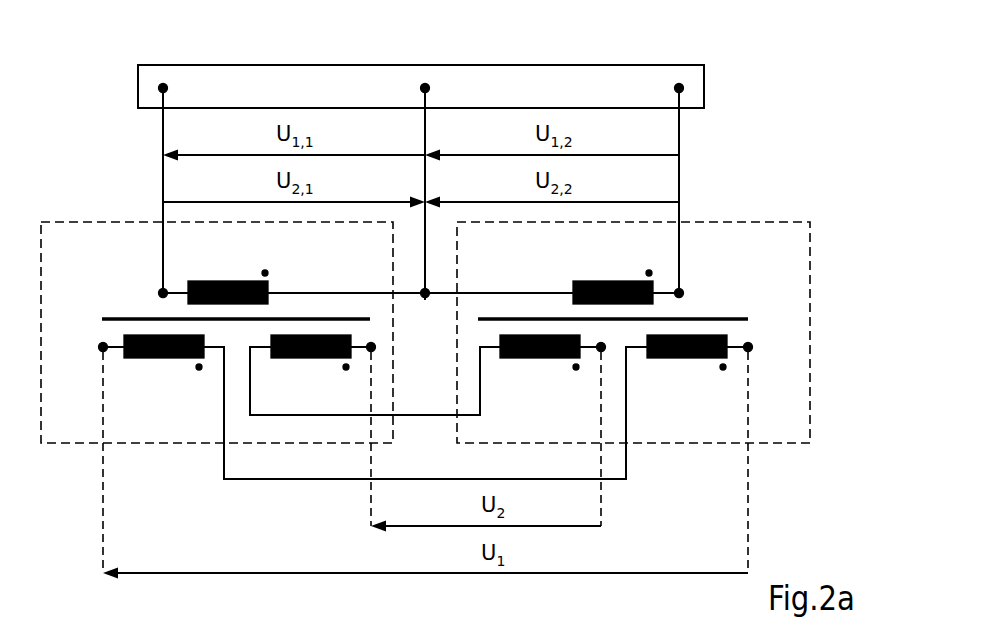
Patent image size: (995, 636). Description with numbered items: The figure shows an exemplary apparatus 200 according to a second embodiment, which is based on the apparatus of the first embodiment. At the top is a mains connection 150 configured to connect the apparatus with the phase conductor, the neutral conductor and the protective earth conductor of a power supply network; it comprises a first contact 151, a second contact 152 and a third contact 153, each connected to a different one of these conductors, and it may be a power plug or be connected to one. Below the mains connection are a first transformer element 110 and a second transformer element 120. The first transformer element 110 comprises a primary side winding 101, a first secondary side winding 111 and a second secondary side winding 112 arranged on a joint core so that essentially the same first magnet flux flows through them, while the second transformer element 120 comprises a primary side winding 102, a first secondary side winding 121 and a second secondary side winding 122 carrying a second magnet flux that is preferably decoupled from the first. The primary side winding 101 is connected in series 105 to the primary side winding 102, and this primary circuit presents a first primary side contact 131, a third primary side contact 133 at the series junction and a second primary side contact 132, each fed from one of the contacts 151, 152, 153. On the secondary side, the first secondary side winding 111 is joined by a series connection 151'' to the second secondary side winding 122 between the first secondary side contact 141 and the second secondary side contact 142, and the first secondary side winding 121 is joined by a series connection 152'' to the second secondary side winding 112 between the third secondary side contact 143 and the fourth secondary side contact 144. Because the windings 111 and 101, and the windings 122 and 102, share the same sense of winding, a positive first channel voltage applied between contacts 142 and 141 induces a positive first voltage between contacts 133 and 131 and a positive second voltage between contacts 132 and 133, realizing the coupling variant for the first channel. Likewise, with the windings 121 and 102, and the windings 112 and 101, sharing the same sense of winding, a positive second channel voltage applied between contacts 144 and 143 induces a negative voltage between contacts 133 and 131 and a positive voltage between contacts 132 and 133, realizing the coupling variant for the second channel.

The apparatus 200 is at (768, 80).
The mains connection 150 is at (563, 65).
The first contact 151 is at (178, 58).
The second contact 152 is at (440, 58).
The third contact 153 is at (682, 78).
The first transformer element 110 is at (92, 222).
The second transformer element 120 is at (760, 222).
The primary side winding of the first transformer element 101 is at (215, 281).
The primary side winding of the second transformer element 102 is at (598, 281).
The first primary side contact 131 is at (160, 290).
The second primary side contact 132 is at (684, 291).
The third primary side contact 133 is at (421, 290).
The series connection 105 is at (410, 296).
The first secondary side winding of the first transformer element 111 is at (156, 358).
The second secondary side winding of the first transformer element 112 is at (299, 358).
The first secondary side winding of the second transformer element 121 is at (535, 358).
The second secondary side winding of the second transformer element 122 is at (677, 358).
The first secondary side contact 141 is at (100, 352).
The second secondary side contact 142 is at (751, 352).
The third secondary side contact 143 is at (376, 350).
The fourth secondary side contact 144 is at (598, 353).
The series connection 151'' is at (295, 503).
The series connection 152'' is at (435, 440).